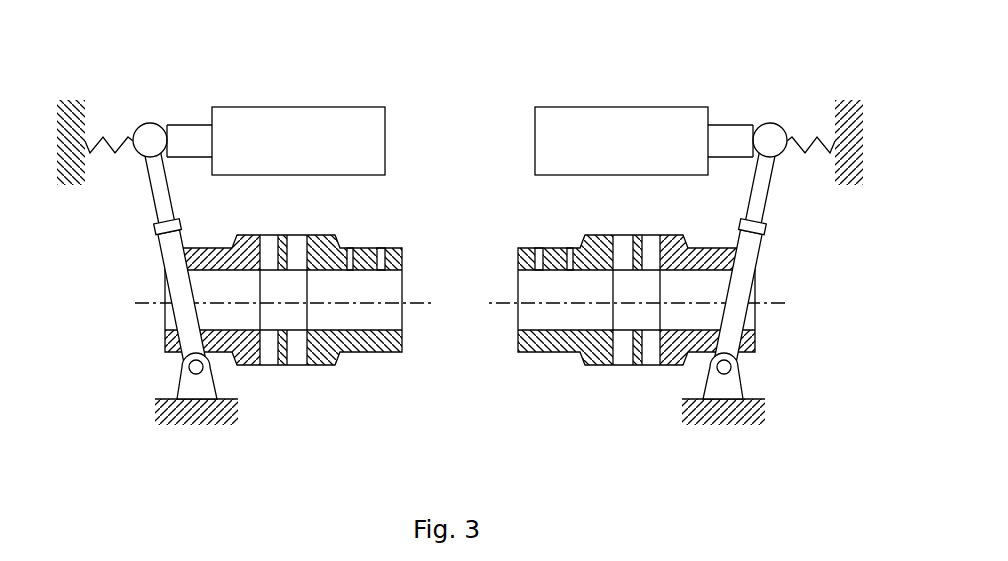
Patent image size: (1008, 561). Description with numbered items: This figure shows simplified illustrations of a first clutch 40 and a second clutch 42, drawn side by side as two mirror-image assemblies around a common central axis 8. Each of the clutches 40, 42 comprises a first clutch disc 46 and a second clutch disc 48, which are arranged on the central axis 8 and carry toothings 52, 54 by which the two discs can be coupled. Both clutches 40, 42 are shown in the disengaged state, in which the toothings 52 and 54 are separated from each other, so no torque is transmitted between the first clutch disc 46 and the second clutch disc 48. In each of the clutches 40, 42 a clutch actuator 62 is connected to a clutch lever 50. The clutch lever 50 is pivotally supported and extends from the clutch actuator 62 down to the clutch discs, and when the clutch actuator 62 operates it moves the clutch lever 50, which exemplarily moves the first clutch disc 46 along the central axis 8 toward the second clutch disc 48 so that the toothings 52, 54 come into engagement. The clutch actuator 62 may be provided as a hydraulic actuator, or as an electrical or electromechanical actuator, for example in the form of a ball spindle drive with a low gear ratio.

The central axis 8 is at (415, 305).
The first clutch 40 is at (317, 397).
The second clutch 42 is at (603, 397).
The first clutch disc 46 is at (242, 235).
The second clutch disc 48 is at (333, 235).
The clutch lever 50 is at (157, 200).
The toothing 52 is at (267, 233).
The toothing 54 is at (297, 235).
The clutch actuator 62 is at (283, 118).